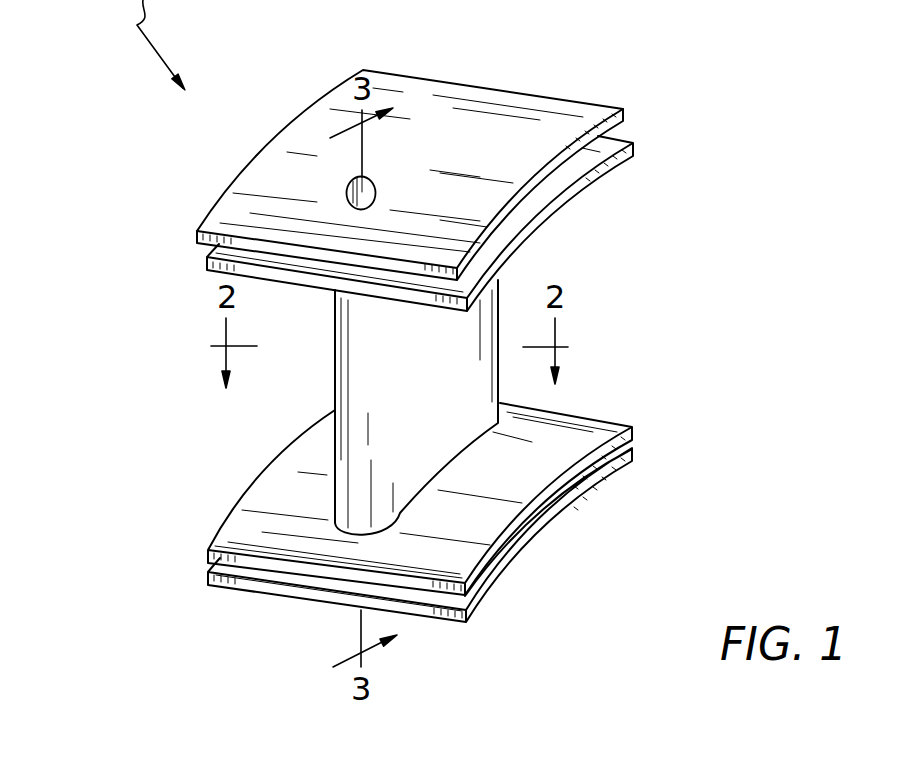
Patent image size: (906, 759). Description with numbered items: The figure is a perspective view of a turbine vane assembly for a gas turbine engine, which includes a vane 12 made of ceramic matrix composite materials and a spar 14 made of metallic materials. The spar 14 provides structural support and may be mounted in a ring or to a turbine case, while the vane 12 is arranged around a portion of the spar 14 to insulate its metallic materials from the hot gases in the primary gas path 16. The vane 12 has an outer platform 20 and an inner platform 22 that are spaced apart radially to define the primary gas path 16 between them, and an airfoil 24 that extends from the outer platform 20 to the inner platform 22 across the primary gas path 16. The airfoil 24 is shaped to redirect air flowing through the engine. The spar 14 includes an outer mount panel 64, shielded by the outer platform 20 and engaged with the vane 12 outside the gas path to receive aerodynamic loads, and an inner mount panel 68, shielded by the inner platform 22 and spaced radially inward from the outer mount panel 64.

The vane 12 is at (564, 318).
The spar 14 is at (587, 67).
The primary gas path 16 is at (185, 389).
The outer platform 20 is at (613, 172).
The inner platform 22 is at (622, 423).
The airfoil 24 is at (519, 395).
The outer mount panel 64 is at (628, 113).
The inner mount panel 68 is at (577, 498).